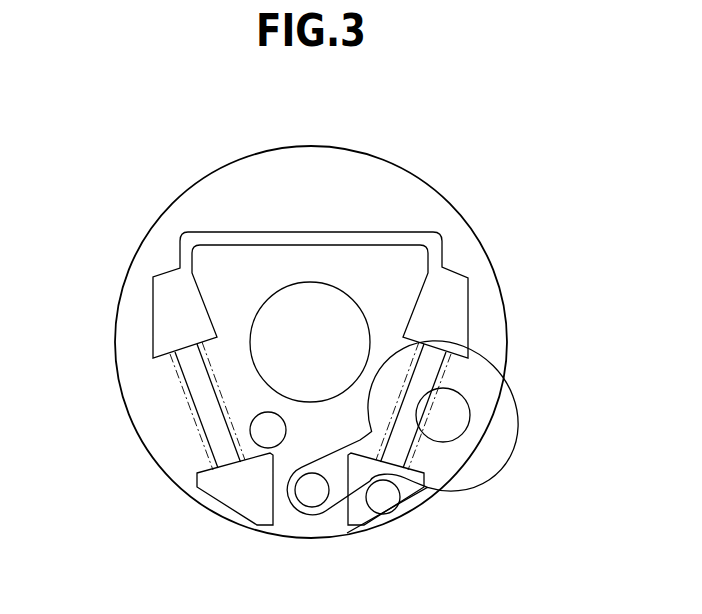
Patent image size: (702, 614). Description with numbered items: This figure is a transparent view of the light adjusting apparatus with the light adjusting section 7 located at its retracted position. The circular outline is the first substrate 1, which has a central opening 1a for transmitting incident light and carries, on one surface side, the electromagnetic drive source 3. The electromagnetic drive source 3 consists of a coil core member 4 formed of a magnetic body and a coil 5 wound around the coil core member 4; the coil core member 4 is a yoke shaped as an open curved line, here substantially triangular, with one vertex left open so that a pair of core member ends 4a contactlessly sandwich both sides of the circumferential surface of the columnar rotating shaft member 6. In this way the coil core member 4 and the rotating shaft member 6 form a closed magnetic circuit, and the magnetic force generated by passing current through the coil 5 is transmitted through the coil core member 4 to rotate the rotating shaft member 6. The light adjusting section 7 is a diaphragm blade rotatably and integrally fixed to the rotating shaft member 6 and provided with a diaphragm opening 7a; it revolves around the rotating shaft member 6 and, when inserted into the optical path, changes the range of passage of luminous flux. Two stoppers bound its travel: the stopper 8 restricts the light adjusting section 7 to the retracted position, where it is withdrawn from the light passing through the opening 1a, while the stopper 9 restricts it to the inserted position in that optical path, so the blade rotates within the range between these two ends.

The first substrate 1 is at (336, 165).
The opening 1a is at (348, 307).
The electromagnetic drive source 3 is at (70, 313).
The coil core member 4 is at (168, 320).
The coil 5 is at (187, 388).
The core member ends 4a is at (278, 520).
The rotating shaft member 6 is at (318, 497).
The light adjusting section 7 is at (482, 363).
The diaphragm opening 7a is at (462, 418).
The stopper 8 is at (388, 500).
The stopper 9 is at (265, 435).